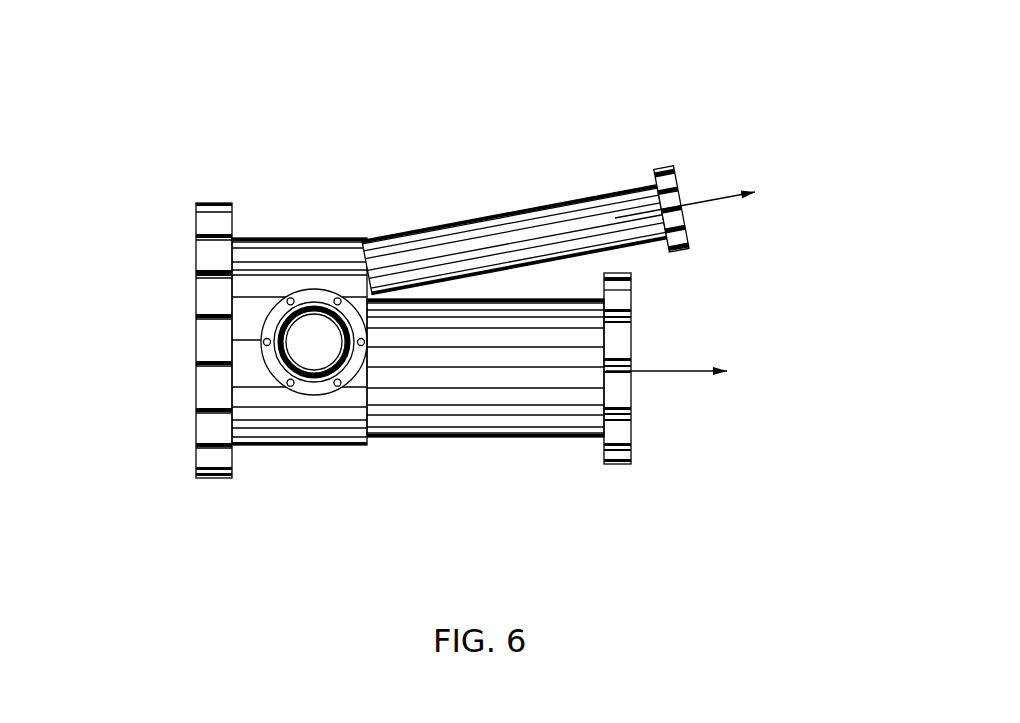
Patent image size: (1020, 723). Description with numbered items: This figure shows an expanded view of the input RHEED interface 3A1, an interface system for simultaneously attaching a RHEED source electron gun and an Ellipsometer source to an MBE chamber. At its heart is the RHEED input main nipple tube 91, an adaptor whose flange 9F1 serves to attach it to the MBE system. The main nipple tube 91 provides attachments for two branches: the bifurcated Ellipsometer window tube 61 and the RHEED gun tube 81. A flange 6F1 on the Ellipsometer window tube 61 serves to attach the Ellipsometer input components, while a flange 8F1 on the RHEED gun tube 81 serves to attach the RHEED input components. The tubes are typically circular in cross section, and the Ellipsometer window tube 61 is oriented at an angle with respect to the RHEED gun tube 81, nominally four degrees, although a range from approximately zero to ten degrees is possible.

The input RHEED interface 3A1 is at (175, 85).
The RHEED input main nipple tube 91 is at (328, 450).
The flange 9F1 is at (212, 191).
The Ellipsometer window tube 61 is at (515, 198).
The flange 6F1 is at (667, 160).
The RHEED gun tube 81 is at (537, 448).
The flange 8F1 is at (622, 470).